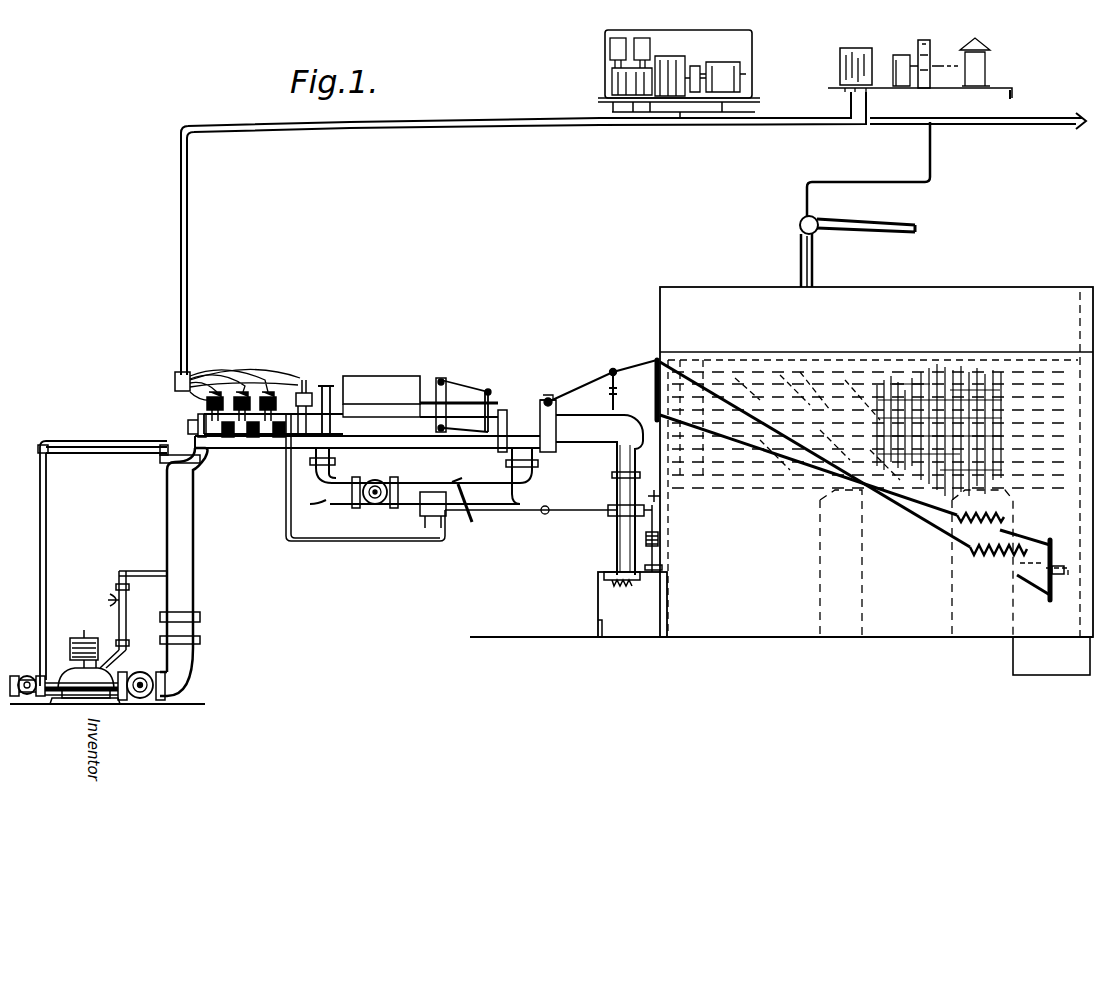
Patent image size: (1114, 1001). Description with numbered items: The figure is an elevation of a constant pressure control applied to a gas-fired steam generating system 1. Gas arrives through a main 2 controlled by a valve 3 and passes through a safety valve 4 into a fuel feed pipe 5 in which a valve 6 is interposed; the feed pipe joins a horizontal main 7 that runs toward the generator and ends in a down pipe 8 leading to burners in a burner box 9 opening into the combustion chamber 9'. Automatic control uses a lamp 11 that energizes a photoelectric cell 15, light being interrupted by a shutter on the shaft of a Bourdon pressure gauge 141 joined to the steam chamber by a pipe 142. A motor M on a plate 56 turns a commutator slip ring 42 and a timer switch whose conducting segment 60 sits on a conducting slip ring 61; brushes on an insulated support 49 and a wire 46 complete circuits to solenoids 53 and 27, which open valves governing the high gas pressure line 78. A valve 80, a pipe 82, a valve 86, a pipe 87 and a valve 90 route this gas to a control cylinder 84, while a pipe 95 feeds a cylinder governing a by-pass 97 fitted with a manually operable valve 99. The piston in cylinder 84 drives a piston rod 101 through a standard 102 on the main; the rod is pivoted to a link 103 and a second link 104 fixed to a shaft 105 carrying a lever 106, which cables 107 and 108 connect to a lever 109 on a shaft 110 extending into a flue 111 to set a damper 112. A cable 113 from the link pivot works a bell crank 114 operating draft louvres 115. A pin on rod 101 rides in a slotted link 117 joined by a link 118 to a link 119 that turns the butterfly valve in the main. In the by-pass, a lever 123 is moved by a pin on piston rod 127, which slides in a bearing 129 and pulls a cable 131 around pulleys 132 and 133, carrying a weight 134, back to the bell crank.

The steam generating system 1 is at (650, 338).
The main 2 is at (56, 704).
The valve 3 is at (858, 298).
The safety valve 4 is at (68, 668).
The fuel feed pipe 5 is at (195, 596).
The valve 6 is at (148, 696).
The horizontal main 7 is at (400, 448).
The down pipe 8 is at (617, 463).
The burner box 9 is at (615, 604).
The combustion chamber 9' is at (721, 654).
The lamp 11 is at (992, 70).
The photoelectric cell 15 is at (900, 58).
The solenoid 27 is at (302, 388).
The commutator slip ring 42 is at (612, 78).
The wire 46 is at (200, 401).
The insulated support 49 is at (135, 705).
The solenoid 53 is at (245, 390).
The plate 56 is at (745, 95).
The conducting segment 60 is at (665, 55).
The conducting slip ring 61 is at (695, 66).
The motor M is at (724, 62).
The high gas pressure line 78 is at (135, 446).
The valve 80 is at (190, 428).
The pipe 82 is at (360, 380).
The control cylinder 84 is at (381, 396).
The valve 86 is at (228, 440).
The pipe 87 is at (326, 384).
The valve 90 is at (268, 440).
The pipe 95 is at (286, 504).
The by-pass 97 is at (440, 475).
The manually operable valve 99 is at (376, 505).
The piston rod 101 is at (538, 405).
The standard 102 is at (550, 400).
The link 103 is at (560, 397).
The link 104 is at (654, 362).
The shaft 105 is at (720, 400).
The lever 106 is at (730, 414).
The cable 107 is at (755, 398).
The cable 108 is at (755, 462).
The lever 109 is at (1058, 535).
The shaft 110 is at (1066, 563).
The flue 111 is at (1035, 612).
The damper 112 is at (1052, 596).
The cable 113 is at (614, 535).
The bell crank 114 is at (606, 572).
The draft louvres 115 is at (596, 627).
The link 117 is at (436, 383).
The link 118 is at (466, 384).
The link 119 is at (503, 409).
The lever 123 is at (452, 520).
The piston rod 127 is at (492, 508).
The bearing 129 is at (544, 506).
The cable 131 is at (560, 514).
The pulley 132 is at (660, 505).
The pulley 133 is at (664, 568).
The weight 134 is at (660, 539).
The Bourdon pressure gauge 141 is at (924, 40).
The pipe 142 is at (938, 158).